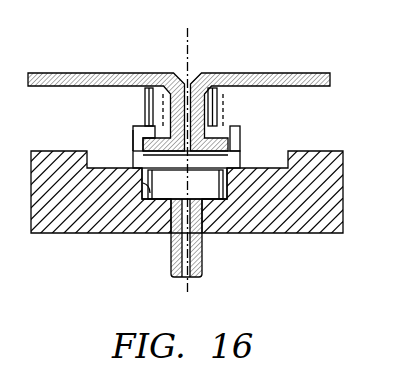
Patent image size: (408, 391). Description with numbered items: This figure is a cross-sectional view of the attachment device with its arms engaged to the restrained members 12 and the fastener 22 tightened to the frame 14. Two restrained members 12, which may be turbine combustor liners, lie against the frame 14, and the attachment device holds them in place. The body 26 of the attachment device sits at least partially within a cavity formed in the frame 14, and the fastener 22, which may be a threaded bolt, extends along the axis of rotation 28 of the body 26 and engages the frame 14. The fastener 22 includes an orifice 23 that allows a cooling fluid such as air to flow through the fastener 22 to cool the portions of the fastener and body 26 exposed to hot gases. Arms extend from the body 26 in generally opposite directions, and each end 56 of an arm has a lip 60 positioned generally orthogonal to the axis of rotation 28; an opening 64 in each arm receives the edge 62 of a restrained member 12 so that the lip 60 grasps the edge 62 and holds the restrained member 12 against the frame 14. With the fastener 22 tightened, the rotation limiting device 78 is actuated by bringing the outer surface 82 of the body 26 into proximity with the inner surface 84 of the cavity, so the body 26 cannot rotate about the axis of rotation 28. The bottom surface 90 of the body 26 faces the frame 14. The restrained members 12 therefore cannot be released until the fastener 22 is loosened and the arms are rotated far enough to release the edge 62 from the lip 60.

The restrained member 12 is at (92, 73).
The axis of rotation 28 is at (192, 68).
The lip 60 is at (146, 110).
The end 56 is at (133, 131).
The opening 64 is at (133, 143).
The edge 62 is at (133, 155).
The body 26 is at (240, 167).
The frame 14 is at (332, 228).
The outer surface 82 is at (193, 183).
The inner surface 84 is at (157, 215).
The bottom surface 90 is at (155, 200).
The fastener 22 is at (171, 256).
The orifice 23 is at (190, 277).
The rotation limiting device 78 is at (200, 196).